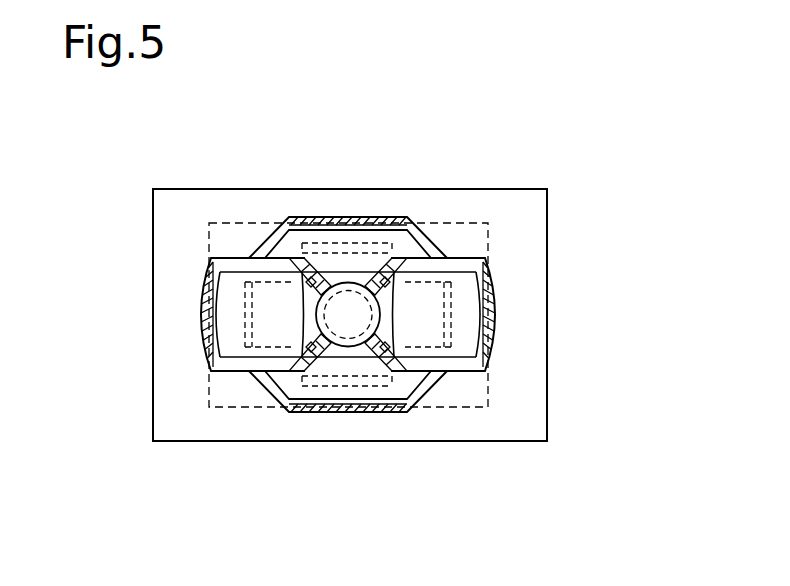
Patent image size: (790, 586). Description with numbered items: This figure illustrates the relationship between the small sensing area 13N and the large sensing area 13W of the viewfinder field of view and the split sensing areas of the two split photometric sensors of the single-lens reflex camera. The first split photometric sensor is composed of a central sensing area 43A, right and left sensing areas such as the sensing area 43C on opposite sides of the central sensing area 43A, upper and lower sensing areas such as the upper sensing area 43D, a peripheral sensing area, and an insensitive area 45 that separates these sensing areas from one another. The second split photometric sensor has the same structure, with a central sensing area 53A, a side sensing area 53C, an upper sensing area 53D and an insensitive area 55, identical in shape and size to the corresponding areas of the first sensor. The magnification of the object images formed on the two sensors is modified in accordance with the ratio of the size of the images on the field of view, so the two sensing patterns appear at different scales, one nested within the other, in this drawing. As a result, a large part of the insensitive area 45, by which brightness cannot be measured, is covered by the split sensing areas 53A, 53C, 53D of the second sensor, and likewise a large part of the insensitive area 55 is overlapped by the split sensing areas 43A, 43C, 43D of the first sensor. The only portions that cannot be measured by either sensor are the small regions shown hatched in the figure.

The large sensing area 13W is at (273, 188).
The small sensing area 13N is at (248, 407).
The insensitive area 55 is at (482, 256).
The upper sensing area 53D is at (381, 226).
The central sensing area 53A is at (363, 343).
The left sensing area 53C is at (465, 295).
The upper sensing area 43D is at (348, 255).
The central sensing area 43A is at (348, 318).
The left sensing area 43C is at (430, 318).
The insensitive area 45 is at (487, 360).